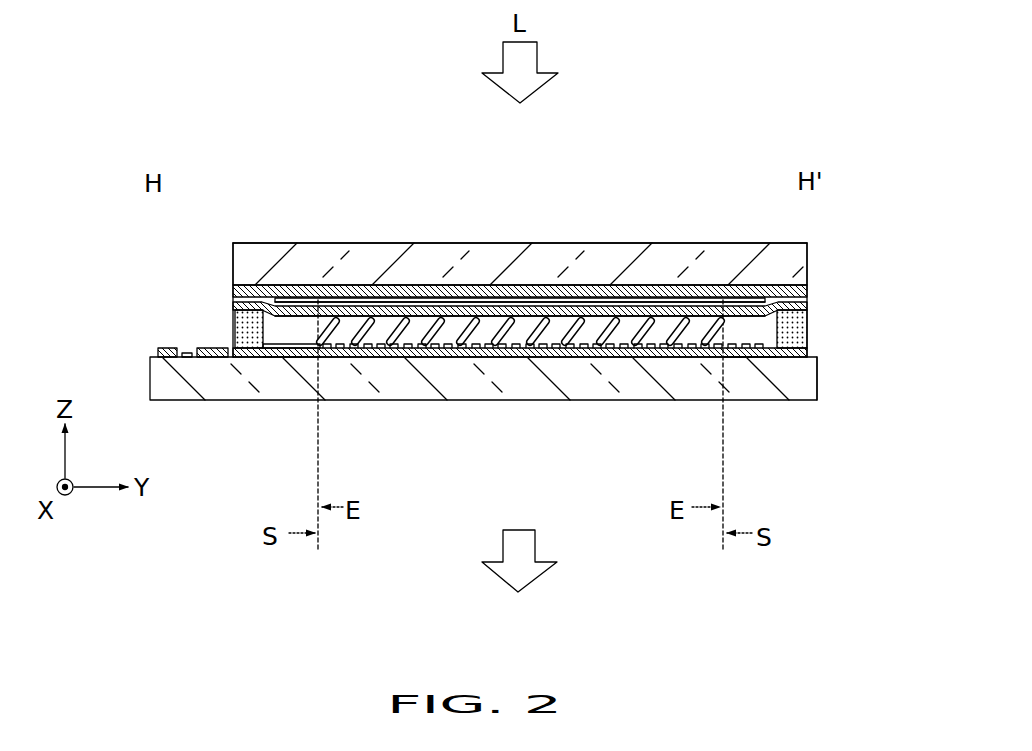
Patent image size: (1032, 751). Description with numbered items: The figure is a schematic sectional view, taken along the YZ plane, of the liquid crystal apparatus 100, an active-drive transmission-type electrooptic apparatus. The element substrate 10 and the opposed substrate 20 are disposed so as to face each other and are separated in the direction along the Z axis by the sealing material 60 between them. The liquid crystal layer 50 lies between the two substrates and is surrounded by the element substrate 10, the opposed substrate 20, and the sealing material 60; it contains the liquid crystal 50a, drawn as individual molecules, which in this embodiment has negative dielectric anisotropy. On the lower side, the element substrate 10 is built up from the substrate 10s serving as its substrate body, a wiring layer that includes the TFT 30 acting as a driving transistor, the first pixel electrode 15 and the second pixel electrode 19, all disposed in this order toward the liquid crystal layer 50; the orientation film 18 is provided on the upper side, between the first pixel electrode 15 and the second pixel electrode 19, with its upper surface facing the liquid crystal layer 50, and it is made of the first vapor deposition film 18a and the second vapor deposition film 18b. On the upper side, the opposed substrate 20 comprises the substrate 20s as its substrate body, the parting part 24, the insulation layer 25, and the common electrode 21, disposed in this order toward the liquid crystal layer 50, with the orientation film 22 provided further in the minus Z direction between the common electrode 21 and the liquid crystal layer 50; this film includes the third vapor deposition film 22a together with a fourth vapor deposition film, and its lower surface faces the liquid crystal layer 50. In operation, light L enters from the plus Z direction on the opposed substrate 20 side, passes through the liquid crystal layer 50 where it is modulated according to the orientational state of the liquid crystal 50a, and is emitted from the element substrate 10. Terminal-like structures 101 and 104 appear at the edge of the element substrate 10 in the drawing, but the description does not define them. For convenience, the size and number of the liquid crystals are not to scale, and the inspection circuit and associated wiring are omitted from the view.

The liquid crystal apparatus 100 is at (910, 79).
The element substrate 10 is at (830, 348).
The substrate 10s is at (800, 386).
The first pixel electrode 15 is at (360, 350).
The orientation film 18 is at (436, 488).
The first vapor deposition film 18a is at (412, 338).
The second vapor deposition film 18b is at (543, 346).
The second pixel electrode 19 is at (292, 358).
The opposed substrate 20 is at (830, 243).
The substrate 20s is at (462, 270).
The common electrode 21 is at (668, 302).
The orientation film 22 is at (580, 164).
The third vapor deposition film 22a is at (537, 305).
The parting part 24 is at (302, 287).
The insulation layer 25 is at (412, 298).
The TFT 30 is at (382, 485).
The liquid crystal layer 50 is at (652, 352).
The liquid crystal 50a is at (612, 343).
The sealing material 60 is at (800, 332).
The terminal 101 is at (213, 347).
The terminal 104 is at (164, 347).